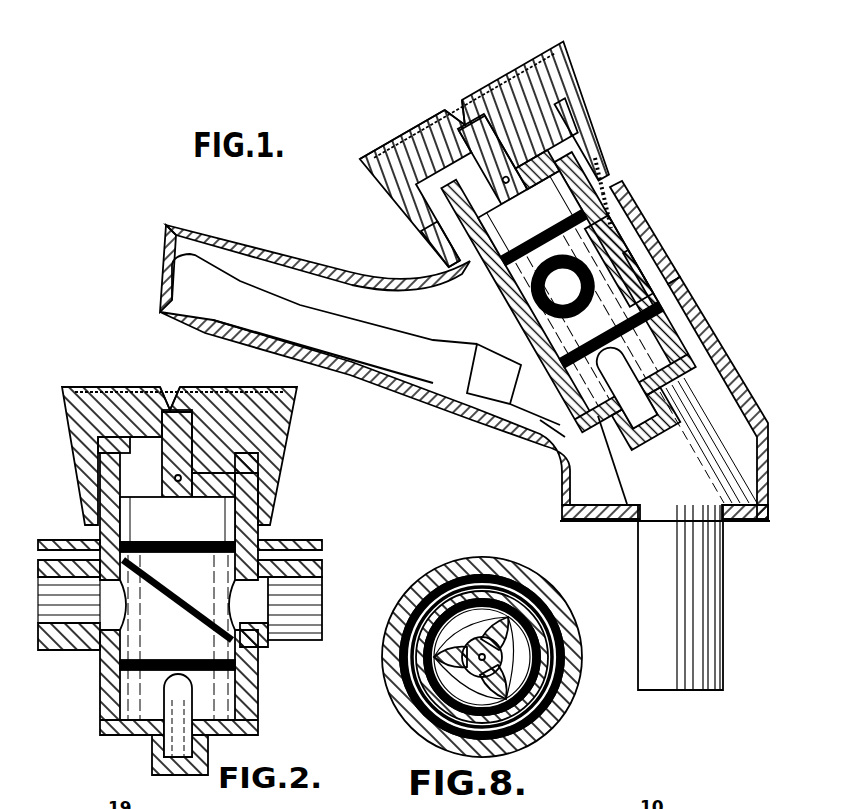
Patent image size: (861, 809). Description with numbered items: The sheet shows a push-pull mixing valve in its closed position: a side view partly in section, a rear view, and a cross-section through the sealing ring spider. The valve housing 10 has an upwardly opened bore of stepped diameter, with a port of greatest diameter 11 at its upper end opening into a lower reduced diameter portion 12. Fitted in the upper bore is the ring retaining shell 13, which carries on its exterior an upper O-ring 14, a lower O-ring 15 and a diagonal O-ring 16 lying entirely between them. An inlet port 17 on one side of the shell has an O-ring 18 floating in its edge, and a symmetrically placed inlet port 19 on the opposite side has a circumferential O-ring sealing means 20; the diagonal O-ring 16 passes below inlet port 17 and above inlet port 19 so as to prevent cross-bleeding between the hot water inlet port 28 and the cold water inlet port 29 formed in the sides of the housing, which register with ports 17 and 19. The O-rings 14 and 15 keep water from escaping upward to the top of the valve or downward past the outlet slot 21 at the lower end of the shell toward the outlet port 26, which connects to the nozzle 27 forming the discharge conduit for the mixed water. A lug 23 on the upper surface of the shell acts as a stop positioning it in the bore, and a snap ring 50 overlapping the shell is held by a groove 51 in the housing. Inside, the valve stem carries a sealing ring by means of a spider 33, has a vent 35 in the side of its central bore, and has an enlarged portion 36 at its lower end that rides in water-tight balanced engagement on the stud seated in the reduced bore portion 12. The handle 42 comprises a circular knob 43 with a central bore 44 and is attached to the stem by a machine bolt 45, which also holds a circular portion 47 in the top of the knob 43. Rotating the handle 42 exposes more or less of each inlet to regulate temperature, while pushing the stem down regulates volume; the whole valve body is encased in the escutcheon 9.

In FIG. 1, the escutcheon 9 is at (704, 310).
In FIG. 1, the valve housing 10 is at (625, 254).
In FIG. 2, the valve housing 10 is at (257, 705).
In FIG. 8, the valve housing 10 is at (548, 727).
In FIG. 1, the port of greatest diameter 11 is at (598, 170).
In FIG. 1, the lower reduced diameter portion 12 is at (655, 410).
In FIG. 2, the lower reduced diameter portion 12 is at (172, 740).
In FIG. 1, the ring retaining shell 13 is at (590, 176).
In FIG. 2, the ring retaining shell 13 is at (248, 515).
In FIG. 1, the upper O-ring 14 is at (618, 203).
In FIG. 2, the upper O-ring 14 is at (183, 545).
In FIG. 8, the upper O-ring 14 is at (565, 690).
In FIG. 1, the lower O-ring 15 is at (652, 305).
In FIG. 2, the lower O-ring 15 is at (238, 665).
In FIG. 1, the diagonal O-ring 16 is at (642, 275).
In FIG. 2, the diagonal O-ring 16 is at (177, 615).
In FIG. 1, the inlet port 17 is at (598, 248).
In FIG. 2, the inlet port 17 is at (230, 605).
In FIG. 1, the O-ring 18 is at (520, 300).
In FIG. 2, the O-ring 18 is at (265, 560).
In FIG. 2, the inlet port 19 is at (123, 605).
In FIG. 2, the circumferential O-ring sealing means 20 is at (120, 637).
In FIG. 1, the outlet slot 21 is at (540, 420).
In FIG. 2, the outlet slot 21 is at (187, 695).
In FIG. 1, the lug 23 is at (578, 145).
In FIG. 1, the outlet port 26 is at (520, 415).
In FIG. 1, the nozzle 27 is at (389, 356).
In FIG. 2, the hot water inlet port 28 is at (290, 592).
In FIG. 2, the cold water inlet port 29 is at (98, 602).
In FIG. 8, the spider 33 is at (520, 617).
In FIG. 1, the vent 35 is at (530, 214).
In FIG. 8, the enlarged portion 36 is at (517, 652).
In FIG. 1, the handle 42 is at (360, 167).
In FIG. 2, the handle 42 is at (286, 421).
In FIG. 1, the circular knob 43 is at (375, 148).
In FIG. 2, the circular knob 43 is at (267, 387).
In FIG. 1, the central bore 44 is at (480, 120).
In FIG. 2, the central bore 44 is at (130, 417).
In FIG. 1, the machine bolt 45 is at (463, 97).
In FIG. 2, the machine bolt 45 is at (187, 393).
In FIG. 1, the circular portion 47 is at (403, 137).
In FIG. 2, the circular portion 47 is at (138, 391).
In FIG. 1, the snap ring 50 is at (567, 113).
In FIG. 1, the groove 51 is at (430, 240).